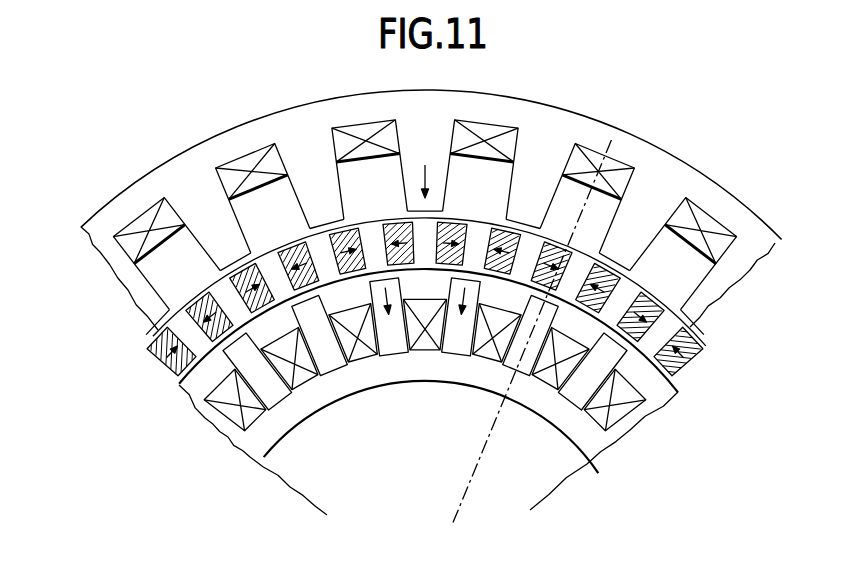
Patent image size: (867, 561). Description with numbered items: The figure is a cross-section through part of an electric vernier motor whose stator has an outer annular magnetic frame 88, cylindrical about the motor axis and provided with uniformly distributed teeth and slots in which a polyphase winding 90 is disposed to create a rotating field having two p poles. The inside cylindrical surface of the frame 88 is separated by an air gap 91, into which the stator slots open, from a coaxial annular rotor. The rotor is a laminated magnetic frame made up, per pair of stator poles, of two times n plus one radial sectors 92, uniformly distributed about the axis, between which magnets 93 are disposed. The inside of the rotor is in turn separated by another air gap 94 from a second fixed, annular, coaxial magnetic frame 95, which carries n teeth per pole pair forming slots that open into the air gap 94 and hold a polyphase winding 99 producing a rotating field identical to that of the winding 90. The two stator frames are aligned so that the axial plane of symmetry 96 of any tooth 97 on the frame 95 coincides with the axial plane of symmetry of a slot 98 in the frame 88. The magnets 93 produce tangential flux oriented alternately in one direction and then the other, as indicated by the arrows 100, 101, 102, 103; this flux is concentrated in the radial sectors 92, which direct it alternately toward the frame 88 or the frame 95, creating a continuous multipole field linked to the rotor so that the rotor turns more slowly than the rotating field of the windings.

The annular magnetic frame 88 is at (544, 128).
The polyphase winding 90 is at (367, 131).
The air gap 91 is at (554, 242).
The radial sector 92 is at (250, 282).
The magnet 93 is at (303, 262).
The air gap 94 is at (630, 350).
The fixed magnetic frame 95 is at (587, 433).
The axial plane of symmetry 96 is at (499, 421).
The tooth 97 is at (543, 312).
The slot 98 is at (602, 211).
The polyphase winding 99 is at (362, 349).
The arrow 100 is at (508, 228).
The arrow 101 is at (450, 227).
The arrow 102 is at (407, 227).
The arrow 103 is at (343, 236).